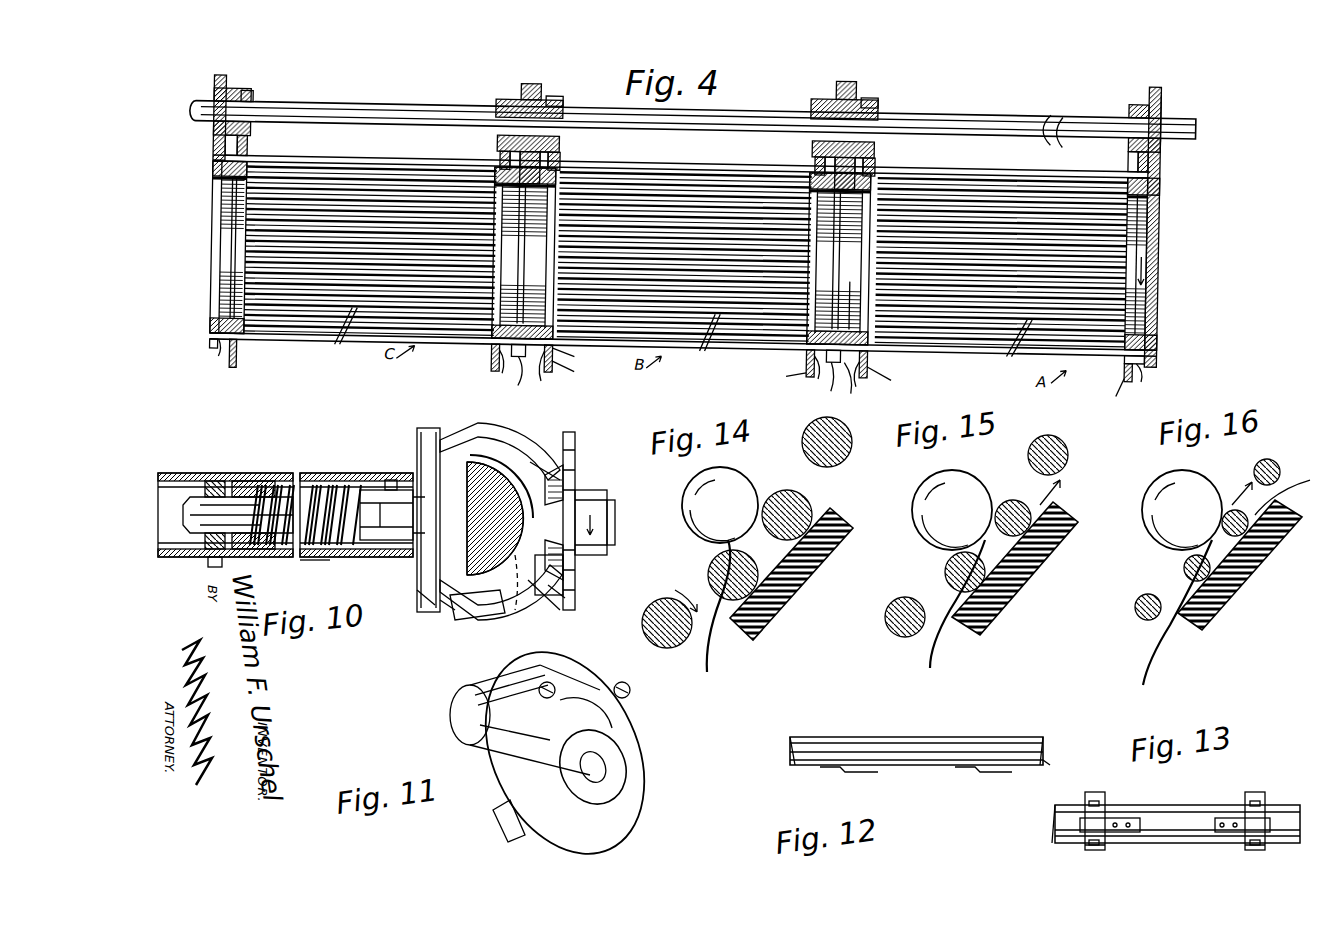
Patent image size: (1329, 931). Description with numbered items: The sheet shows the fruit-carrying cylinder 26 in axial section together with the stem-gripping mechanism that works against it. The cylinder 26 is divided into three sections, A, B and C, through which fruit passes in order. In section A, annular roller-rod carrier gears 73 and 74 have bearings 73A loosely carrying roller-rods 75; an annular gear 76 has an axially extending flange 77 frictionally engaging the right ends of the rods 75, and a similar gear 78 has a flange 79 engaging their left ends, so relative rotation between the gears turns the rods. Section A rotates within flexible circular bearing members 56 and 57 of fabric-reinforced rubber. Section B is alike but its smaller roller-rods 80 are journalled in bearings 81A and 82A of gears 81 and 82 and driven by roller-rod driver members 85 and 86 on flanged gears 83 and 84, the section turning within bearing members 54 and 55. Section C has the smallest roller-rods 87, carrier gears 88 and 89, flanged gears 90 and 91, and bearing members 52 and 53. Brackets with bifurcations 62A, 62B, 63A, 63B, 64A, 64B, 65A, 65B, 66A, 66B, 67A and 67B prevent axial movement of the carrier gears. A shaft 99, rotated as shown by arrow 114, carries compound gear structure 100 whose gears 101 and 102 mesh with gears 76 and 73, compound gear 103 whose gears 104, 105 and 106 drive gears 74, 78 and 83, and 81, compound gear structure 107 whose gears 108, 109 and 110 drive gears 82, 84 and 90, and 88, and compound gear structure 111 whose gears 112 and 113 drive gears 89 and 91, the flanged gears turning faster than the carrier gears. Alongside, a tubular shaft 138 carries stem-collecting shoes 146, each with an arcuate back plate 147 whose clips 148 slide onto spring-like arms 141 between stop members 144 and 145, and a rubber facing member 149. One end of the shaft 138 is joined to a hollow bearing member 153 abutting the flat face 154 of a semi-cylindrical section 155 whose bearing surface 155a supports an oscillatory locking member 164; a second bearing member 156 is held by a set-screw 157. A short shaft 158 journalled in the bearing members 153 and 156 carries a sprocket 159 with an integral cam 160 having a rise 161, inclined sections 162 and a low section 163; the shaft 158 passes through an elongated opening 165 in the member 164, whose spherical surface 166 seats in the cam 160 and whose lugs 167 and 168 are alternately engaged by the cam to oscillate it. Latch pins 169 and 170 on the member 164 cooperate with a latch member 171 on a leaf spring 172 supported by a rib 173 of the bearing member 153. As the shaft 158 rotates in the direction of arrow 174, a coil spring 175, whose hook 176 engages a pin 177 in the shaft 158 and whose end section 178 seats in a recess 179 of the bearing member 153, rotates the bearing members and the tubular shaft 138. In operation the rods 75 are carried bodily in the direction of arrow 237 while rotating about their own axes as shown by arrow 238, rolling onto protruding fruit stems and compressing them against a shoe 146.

In FIG. 4, the fruit-carrying cylinder 26 is at (708, 156).
In FIG. 4, the flexible circular bearing member 52 is at (222, 348).
In FIG. 4, the flexible circular bearing member 53 is at (491, 372).
In FIG. 4, the flexible circular bearing member 54 is at (551, 371).
In FIG. 4, the flexible circular bearing member 55 is at (822, 370).
In FIG. 4, the flexible circular bearing member 56 is at (870, 377).
In FIG. 4, the flexible circular bearing member 57 is at (1146, 366).
In FIG. 4, the bifurcation of bracket 62A is at (213, 160).
In FIG. 4, the bifurcation of bracket 62B is at (252, 155).
In FIG. 4, the bifurcation of bracket 63A is at (500, 158).
In FIG. 4, the bifurcation of bracket 63B is at (500, 152).
In FIG. 4, the bifurcation of bracket 64A is at (552, 155).
In FIG. 4, the bifurcation of bracket 64B is at (565, 160).
In FIG. 4, the bifurcation of bracket 65A is at (815, 160).
In FIG. 4, the bifurcation of bracket 65B is at (815, 152).
In FIG. 4, the bifurcation of bracket 66A is at (868, 156).
In FIG. 4, the bifurcation of bracket 66B is at (880, 162).
In FIG. 4, the bifurcation of bracket 67A is at (1128, 158).
In FIG. 4, the bifurcation of bracket 67B is at (1160, 162).
In FIG. 4, the annular roller-rod carrier gear 73 is at (1112, 395).
In FIG. 4, the bearings 73A is at (1128, 356).
In FIG. 4, the annular roller-rod carrier gear 74 is at (871, 348).
In FIG. 4, the roller-rods 75 is at (1006, 355).
In FIG. 14, the roller-rods 75 is at (815, 450).
In FIG. 4, the annular gear 76 is at (1150, 343).
In FIG. 4, the axially extending flange 77 is at (1160, 325).
In FIG. 4, the annular gear 78 is at (853, 387).
In FIG. 4, the flange 79 is at (853, 296).
In FIG. 4, the roller-rods 80 is at (701, 345).
In FIG. 15, the roller-rods 80 is at (1030, 457).
In FIG. 4, the gear 81 is at (780, 377).
In FIG. 4, the bearings 81A is at (812, 345).
In FIG. 4, the gear 82 is at (571, 375).
In FIG. 4, the bearings 82A is at (579, 357).
In FIG. 4, the gear 83 is at (828, 378).
In FIG. 4, the gear 84 is at (524, 378).
In FIG. 4, the axial flange or roller-rod driver member 85 is at (839, 259).
In FIG. 4, the axial flange or roller-rod driver member 86 is at (524, 253).
In FIG. 4, the roller-rods 87 is at (338, 337).
In FIG. 16, the roller-rods 87 is at (1282, 474).
In FIG. 4, the gear 88 is at (495, 360).
In FIG. 4, the gear 89 is at (238, 367).
In FIG. 4, the flanged gear 90 is at (518, 351).
In FIG. 4, the flanged gear 91 is at (213, 343).
In FIG. 4, the shaft 99 is at (975, 122).
In FIG. 4, the compound gear structure 100 is at (1168, 107).
In FIG. 4, the gear 101 is at (1158, 85).
In FIG. 4, the gear 102 is at (1133, 88).
In FIG. 4, the compound gear 103 is at (866, 88).
In FIG. 4, the gear 104 is at (877, 104).
In FIG. 4, the gear 105 is at (845, 78).
In FIG. 4, the gear 106 is at (815, 90).
In FIG. 4, the compound gear structure 107 is at (552, 86).
In FIG. 4, the gear 108 is at (562, 104).
In FIG. 4, the wide gear 109 is at (530, 78).
In FIG. 4, the gear 110 is at (497, 94).
In FIG. 4, the compound gear structure 111 is at (244, 86).
In FIG. 4, the gear 112 is at (252, 94).
In FIG. 4, the gear 113 is at (215, 80).
In FIG. 4, the arrow 114 is at (1052, 104).
In FIG. 10, the tubular shaft 138 is at (175, 473).
In FIG. 13, the arms 141 is at (1085, 796).
In FIG. 13, the stop members 144 is at (1093, 845).
In FIG. 13, the stop members 145 is at (1094, 801).
In FIG. 12, the stem-gripping shoe 146 is at (1054, 766).
In FIG. 13, the stem-gripping shoe 146 is at (1045, 827).
In FIG. 12, the back plate 147 is at (928, 766).
In FIG. 13, the back plate 147 is at (1068, 828).
In FIG. 12, the clips 148 is at (850, 772).
In FIG. 13, the clips 148 is at (1125, 818).
In FIG. 12, the facing members 149 is at (915, 740).
In FIG. 10, the hollow bearing member 153 is at (375, 557).
In FIG. 11, the hollow bearing member 153 is at (470, 718).
In FIG. 10, the flat face 154 is at (481, 511).
In FIG. 10, the semi-cylindrical section 155 is at (480, 490).
In FIG. 10, the semi-cylindrical bearing surface 155a is at (520, 470).
In FIG. 10, the second bearing member 156 is at (210, 481).
In FIG. 10, the set-screw 157 is at (208, 563).
In FIG. 10, the short shaft 158 is at (232, 497).
In FIG. 10, the sprocket wheel 159 is at (578, 470).
In FIG. 10, the cam 160 is at (578, 485).
In FIG. 10, the rise section 161 is at (560, 592).
In FIG. 10, the inclined sections 162 is at (565, 565).
In FIG. 10, the low section 163 is at (578, 452).
In FIG. 10, the oscillatory locking member 164 is at (498, 618).
In FIG. 10, the elongated opening 165 is at (520, 595).
In FIG. 10, the spherical exterior bearing surface 166 is at (607, 500).
In FIG. 10, the cam-follower lug 167 is at (560, 465).
In FIG. 10, the cam-follower lug 168 is at (530, 585).
In FIG. 10, the latch or stop pin 169 is at (478, 425).
In FIG. 10, the latch or stop pin 170 is at (448, 612).
In FIG. 10, the latch member 171 is at (433, 606).
In FIG. 11, the latch member 171 is at (512, 820).
In FIG. 10, the leaf spring 172 is at (418, 560).
In FIG. 11, the leaf spring 172 is at (505, 765).
In FIG. 10, the rib 173 is at (425, 428).
In FIG. 11, the rib 173 is at (585, 664).
In FIG. 10, the arrow 174 is at (612, 530).
In FIG. 10, the coil spring 175 is at (325, 475).
In FIG. 10, the hook 176 is at (280, 483).
In FIG. 10, the pin 177 is at (258, 481).
In FIG. 10, the axially extending end section 178 is at (370, 490).
In FIG. 10, the recess 179 is at (390, 480).
In FIG. 14, the arrow 237 is at (825, 515).
In FIG. 14, the arrow 238 is at (676, 590).